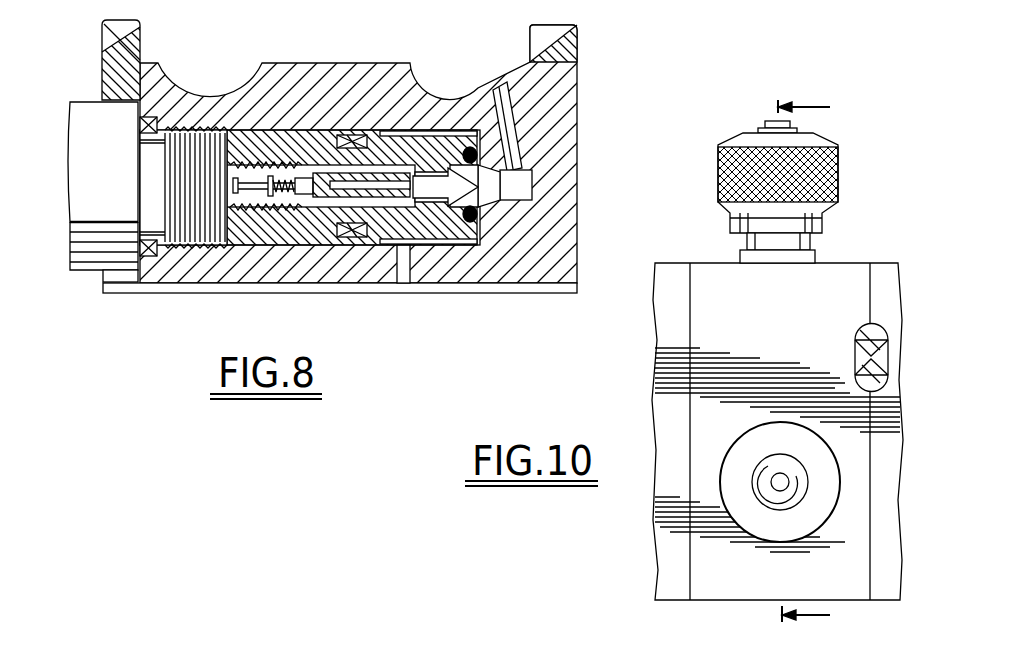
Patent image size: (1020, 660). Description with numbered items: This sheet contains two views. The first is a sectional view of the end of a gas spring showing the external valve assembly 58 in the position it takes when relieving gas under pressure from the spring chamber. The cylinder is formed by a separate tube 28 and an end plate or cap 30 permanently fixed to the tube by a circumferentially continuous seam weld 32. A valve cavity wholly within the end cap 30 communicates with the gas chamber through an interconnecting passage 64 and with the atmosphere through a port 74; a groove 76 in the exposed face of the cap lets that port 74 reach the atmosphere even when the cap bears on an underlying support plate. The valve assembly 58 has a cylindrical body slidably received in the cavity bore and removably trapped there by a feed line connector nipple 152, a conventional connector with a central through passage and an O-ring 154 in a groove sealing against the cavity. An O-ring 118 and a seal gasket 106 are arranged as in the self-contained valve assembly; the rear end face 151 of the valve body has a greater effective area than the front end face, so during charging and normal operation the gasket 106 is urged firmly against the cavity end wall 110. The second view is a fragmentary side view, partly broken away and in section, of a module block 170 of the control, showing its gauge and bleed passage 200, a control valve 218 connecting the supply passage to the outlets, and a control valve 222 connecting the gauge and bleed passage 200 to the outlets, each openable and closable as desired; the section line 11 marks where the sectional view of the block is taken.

In FIG. 8, the tube 28 is at (108, 32).
In FIG. 8, the end plate or cap 30 is at (578, 133).
In FIG. 8, the seam weld 32 is at (578, 63).
In FIG. 8, the external valve assembly 58 is at (278, 250).
In FIG. 8, the interconnecting passage 64 is at (495, 90).
In FIG. 8, the port 74 is at (402, 280).
In FIG. 8, the groove 76 is at (173, 288).
In FIG. 8, the seal gasket 106 is at (532, 187).
In FIG. 8, the cavity end wall 110 is at (478, 133).
In FIG. 8, the O-ring 118 is at (353, 140).
In FIG. 8, the rear end face 151 is at (203, 130).
In FIG. 8, the feed line connector nipple 152 is at (88, 107).
In FIG. 8, the O-ring 154 is at (147, 257).
In FIG. 10, the module block 170 is at (657, 334).
In FIG. 10, the gauge and bleed passage 200 is at (857, 357).
In FIG. 10, the control valve 218 is at (722, 463).
In FIG. 10, the control valve 222 is at (838, 158).
In FIG. 10, the section line 11- 11 is at (804, 363).